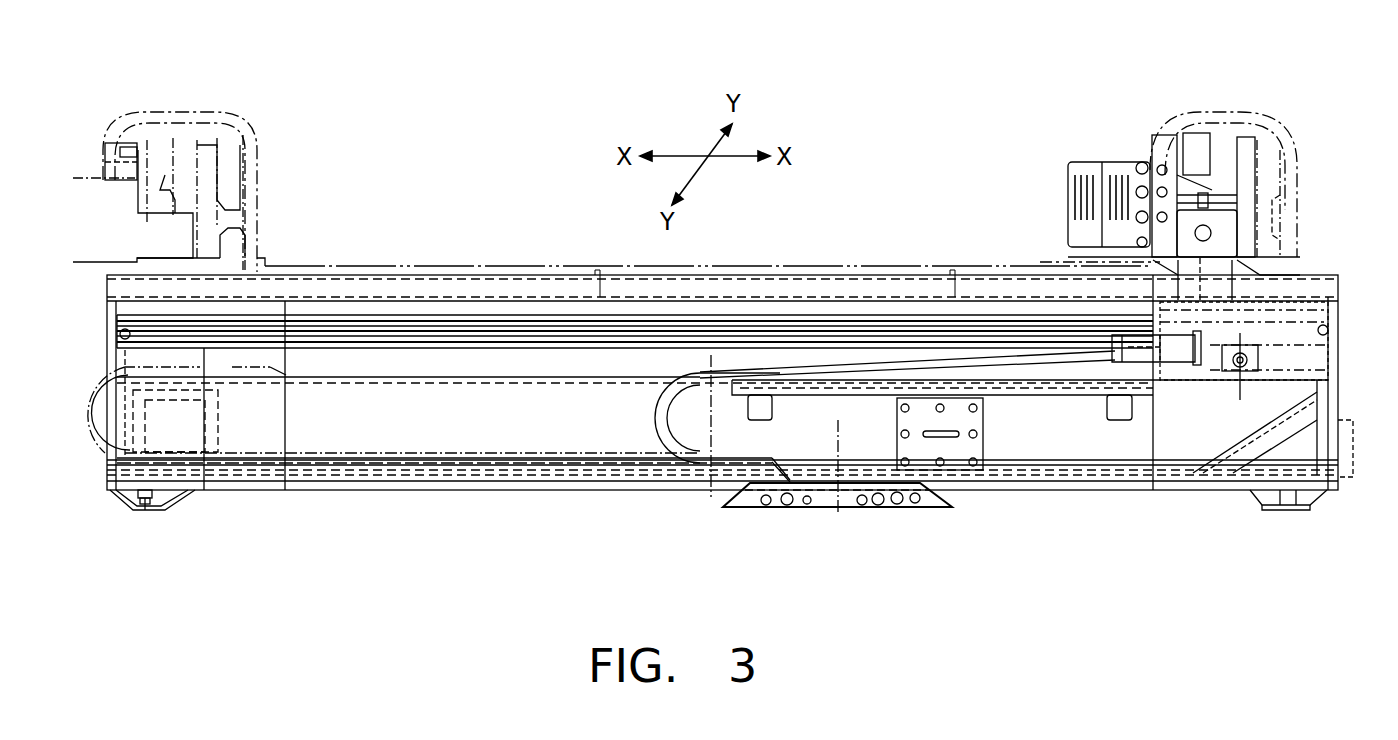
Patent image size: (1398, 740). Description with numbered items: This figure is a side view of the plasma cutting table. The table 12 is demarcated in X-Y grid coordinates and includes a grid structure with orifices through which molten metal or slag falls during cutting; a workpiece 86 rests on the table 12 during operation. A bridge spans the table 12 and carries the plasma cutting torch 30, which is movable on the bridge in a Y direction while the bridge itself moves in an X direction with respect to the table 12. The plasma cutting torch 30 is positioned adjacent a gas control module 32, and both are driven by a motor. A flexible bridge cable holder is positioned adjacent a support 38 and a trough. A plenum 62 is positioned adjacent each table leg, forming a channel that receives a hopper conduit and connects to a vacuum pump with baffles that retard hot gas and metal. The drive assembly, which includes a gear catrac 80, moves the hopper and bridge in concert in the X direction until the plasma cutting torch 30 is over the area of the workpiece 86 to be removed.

The table 12 is at (770, 290).
The plasma cutting torch 30 is at (253, 225).
The gas control module 32 is at (80, 180).
The support 38 is at (1032, 392).
The plenum 62 is at (175, 498).
The gear catrac 80 is at (96, 447).
The workpiece 86 is at (600, 266).